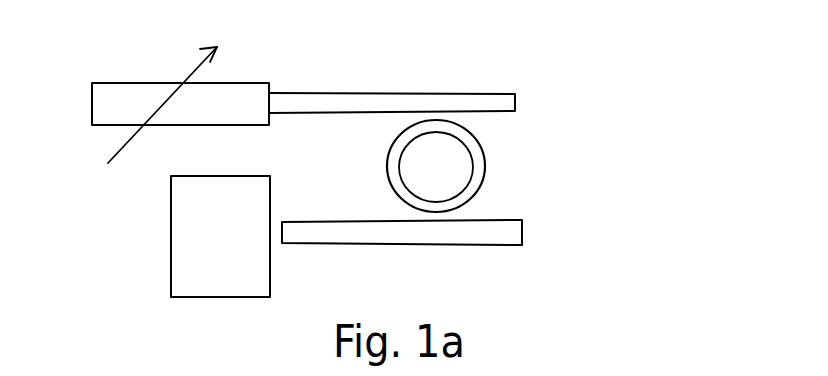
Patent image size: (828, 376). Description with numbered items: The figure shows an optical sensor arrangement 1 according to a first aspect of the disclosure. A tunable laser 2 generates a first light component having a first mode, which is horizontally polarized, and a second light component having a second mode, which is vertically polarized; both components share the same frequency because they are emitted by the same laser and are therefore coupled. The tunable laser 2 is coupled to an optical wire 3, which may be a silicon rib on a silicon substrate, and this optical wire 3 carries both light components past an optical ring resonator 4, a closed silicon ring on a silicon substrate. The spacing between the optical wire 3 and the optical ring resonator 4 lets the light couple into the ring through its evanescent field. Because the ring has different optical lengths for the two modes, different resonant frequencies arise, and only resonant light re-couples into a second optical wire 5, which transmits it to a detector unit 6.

The optical sensor arrangement 1 is at (538, 53).
The tunable laser 2 is at (235, 83).
The optical wire 3 is at (340, 92).
The optical ring resonator 4 is at (485, 162).
The optical wire 5 is at (367, 245).
The detector unit 6 is at (250, 175).